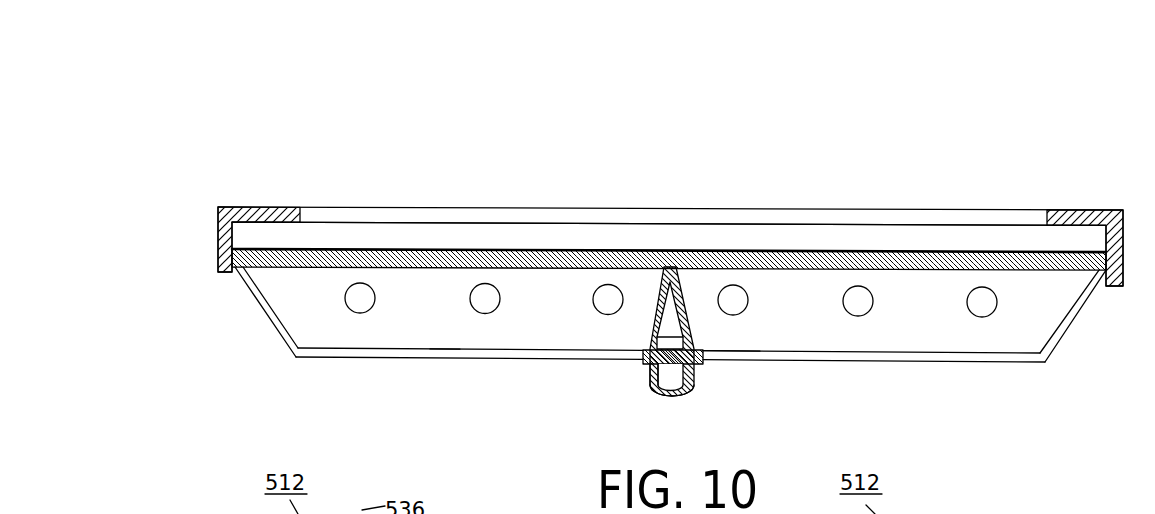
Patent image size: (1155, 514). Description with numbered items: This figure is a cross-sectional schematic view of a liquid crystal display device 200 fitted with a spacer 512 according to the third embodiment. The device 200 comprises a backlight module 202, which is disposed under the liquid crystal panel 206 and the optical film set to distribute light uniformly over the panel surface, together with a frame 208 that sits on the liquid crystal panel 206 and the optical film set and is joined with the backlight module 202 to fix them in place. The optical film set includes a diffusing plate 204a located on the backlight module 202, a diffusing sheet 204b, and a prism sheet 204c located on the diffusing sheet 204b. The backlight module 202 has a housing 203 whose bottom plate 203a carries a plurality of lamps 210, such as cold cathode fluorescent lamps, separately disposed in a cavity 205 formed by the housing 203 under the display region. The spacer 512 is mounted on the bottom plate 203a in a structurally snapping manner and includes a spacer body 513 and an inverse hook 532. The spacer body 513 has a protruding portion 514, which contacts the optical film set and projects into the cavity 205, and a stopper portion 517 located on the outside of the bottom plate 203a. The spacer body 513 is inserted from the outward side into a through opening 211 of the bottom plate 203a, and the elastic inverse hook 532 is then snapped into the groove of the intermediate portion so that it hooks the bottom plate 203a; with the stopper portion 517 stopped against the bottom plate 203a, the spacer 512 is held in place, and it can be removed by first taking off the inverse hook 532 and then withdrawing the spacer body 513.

The liquid crystal display device 200 is at (146, 118).
The backlight module 202 is at (247, 295).
The housing 203 is at (287, 344).
The bottom plate 203a is at (447, 349).
The diffusing plate 204a is at (232, 263).
The diffusing sheet 204b is at (248, 236).
The prism sheet 204c is at (238, 252).
The cavity 205 is at (287, 326).
The liquid crystal panel 206 is at (232, 236).
The frame 208 is at (216, 206).
The lamps 210 is at (488, 298).
The through opening 211 is at (702, 352).
The spacer 512 is at (701, 395).
The spacer body 513 is at (645, 358).
The protruding portion 514 is at (650, 270).
The stopper portion 517 is at (643, 365).
The inverse hook 532 is at (676, 398).